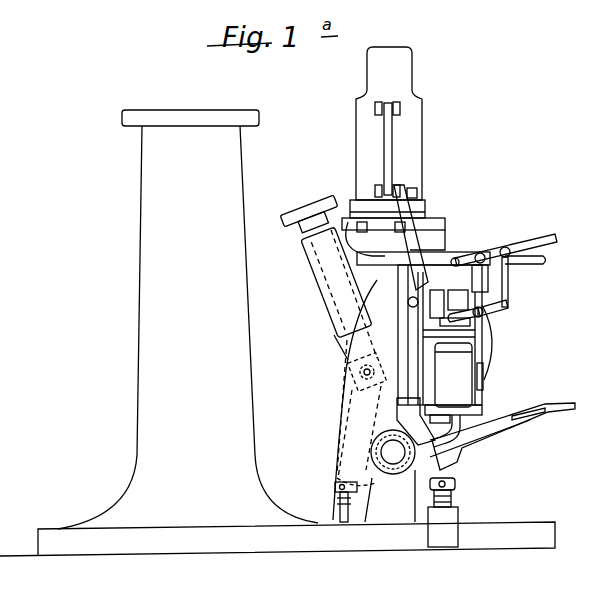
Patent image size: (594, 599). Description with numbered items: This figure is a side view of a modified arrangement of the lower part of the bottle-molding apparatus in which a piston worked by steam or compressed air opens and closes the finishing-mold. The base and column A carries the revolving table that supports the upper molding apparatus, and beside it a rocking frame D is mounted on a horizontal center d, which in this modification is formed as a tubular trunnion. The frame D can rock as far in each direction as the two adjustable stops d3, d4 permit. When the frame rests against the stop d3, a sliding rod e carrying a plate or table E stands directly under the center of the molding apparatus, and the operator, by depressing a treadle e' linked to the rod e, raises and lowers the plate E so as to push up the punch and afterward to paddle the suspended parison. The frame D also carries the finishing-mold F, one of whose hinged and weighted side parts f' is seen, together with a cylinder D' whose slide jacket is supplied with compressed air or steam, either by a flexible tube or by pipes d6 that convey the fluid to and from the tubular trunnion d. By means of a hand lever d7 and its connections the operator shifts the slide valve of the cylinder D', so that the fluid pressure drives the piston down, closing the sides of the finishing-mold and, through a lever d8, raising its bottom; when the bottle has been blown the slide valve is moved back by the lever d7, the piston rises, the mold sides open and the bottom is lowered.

The base and column A is at (212, 401).
The plate or table E is at (312, 204).
The finishing-mold F is at (440, 153).
The side part of finishing-mold f' is at (395, 129).
The rocking frame D is at (411, 358).
The cylinder D' is at (453, 383).
The horizontal center (tubular trunnion) d is at (390, 476).
The adjustable stop d3 is at (453, 511).
The adjustable stop d4 is at (335, 499).
The pipes d6 is at (442, 431).
The hand lever d7 is at (502, 274).
The lever d8 is at (418, 257).
The sliding rod e is at (351, 400).
The treadle e' is at (502, 426).